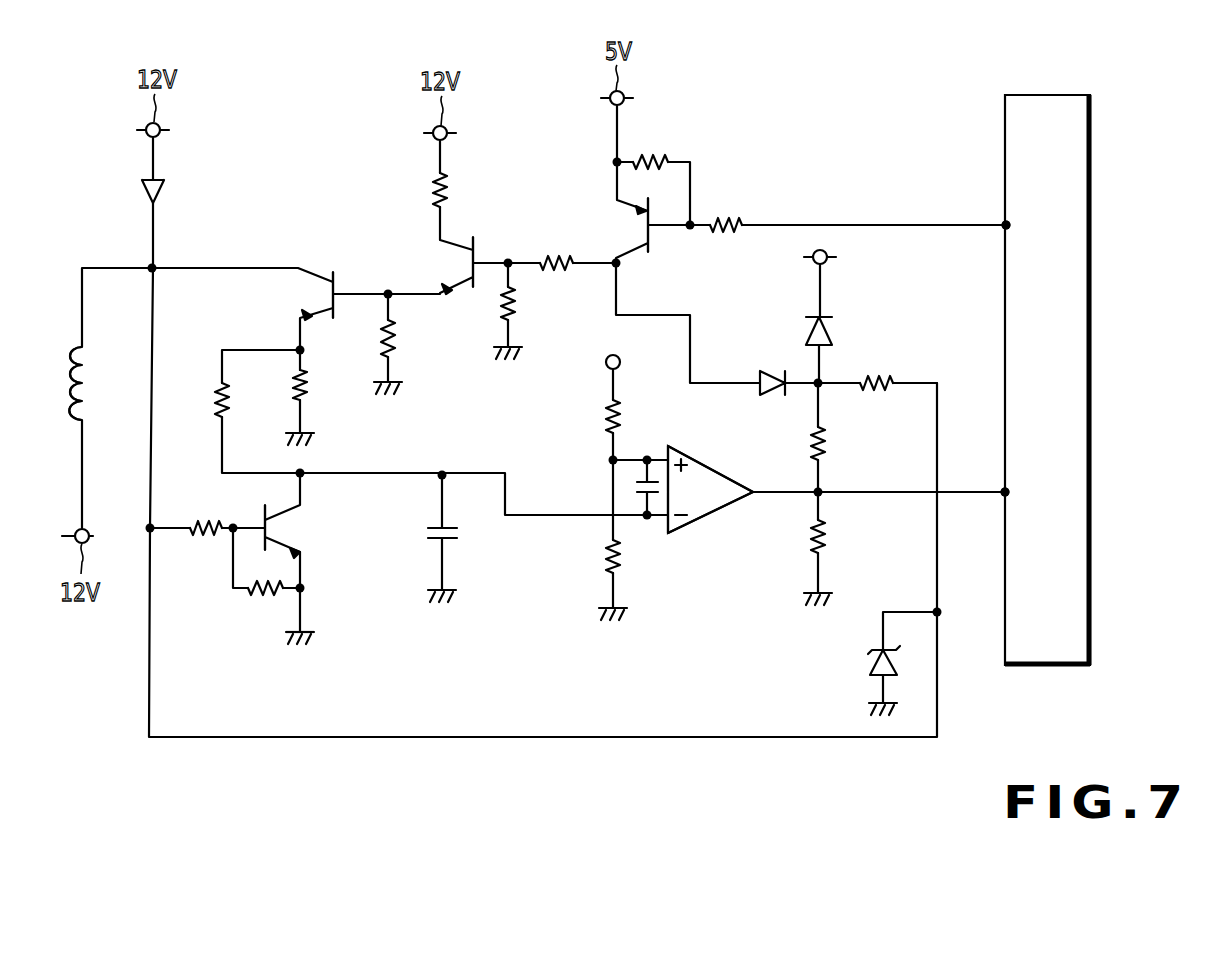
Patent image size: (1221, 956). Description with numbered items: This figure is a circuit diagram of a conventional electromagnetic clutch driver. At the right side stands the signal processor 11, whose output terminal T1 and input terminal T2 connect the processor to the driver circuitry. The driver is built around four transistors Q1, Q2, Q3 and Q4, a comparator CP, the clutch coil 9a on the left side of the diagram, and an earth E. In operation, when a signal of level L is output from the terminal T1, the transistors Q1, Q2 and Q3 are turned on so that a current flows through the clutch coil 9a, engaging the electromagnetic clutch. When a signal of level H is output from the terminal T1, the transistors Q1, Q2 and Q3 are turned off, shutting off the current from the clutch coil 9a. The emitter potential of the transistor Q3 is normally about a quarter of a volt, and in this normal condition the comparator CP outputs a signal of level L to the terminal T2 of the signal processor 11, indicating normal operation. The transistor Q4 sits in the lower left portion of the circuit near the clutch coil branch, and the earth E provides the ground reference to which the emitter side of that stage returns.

The signal processor 11 is at (1074, 93).
The clutch coil 9a is at (83, 392).
The output terminal T1 is at (1005, 224).
The input terminal T2 is at (1000, 497).
The transistor Q1 is at (630, 222).
The transistor Q2 is at (464, 268).
The transistor Q3 is at (310, 297).
The transistor Q4 is at (283, 532).
The comparator CP is at (707, 518).
The earth E is at (313, 641).